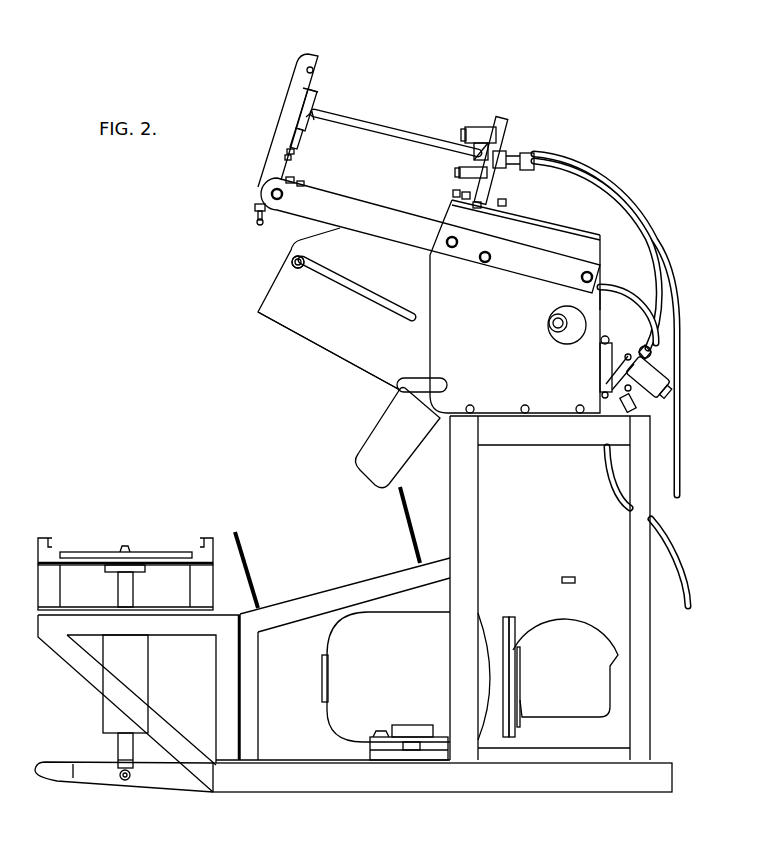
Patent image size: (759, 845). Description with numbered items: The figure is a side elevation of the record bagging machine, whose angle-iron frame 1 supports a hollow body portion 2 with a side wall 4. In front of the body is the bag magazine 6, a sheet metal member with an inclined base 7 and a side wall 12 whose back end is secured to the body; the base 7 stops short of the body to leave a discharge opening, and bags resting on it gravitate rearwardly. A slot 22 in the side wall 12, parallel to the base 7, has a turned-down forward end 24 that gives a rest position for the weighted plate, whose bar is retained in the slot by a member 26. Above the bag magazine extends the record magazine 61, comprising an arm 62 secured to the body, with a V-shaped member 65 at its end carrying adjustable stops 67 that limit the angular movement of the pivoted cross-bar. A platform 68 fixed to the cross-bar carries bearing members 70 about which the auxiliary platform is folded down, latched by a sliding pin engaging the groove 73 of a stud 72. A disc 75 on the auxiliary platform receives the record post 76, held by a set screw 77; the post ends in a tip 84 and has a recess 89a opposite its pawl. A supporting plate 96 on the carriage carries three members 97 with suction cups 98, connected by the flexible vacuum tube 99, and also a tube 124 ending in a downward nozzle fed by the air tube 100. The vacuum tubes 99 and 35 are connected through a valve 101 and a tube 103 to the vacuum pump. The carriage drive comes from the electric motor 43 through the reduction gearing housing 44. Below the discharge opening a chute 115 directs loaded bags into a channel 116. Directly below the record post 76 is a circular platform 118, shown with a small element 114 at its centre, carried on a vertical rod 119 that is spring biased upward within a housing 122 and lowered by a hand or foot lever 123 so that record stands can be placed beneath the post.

The frame 1 is at (669, 530).
The hollow body portion 2 is at (612, 336).
The side wall 4 is at (594, 301).
The bag magazine 6 is at (224, 319).
The inclined base 7 is at (314, 353).
The side wall 12 is at (290, 321).
The slot 22 is at (397, 318).
The forward end of slot 24 is at (289, 265).
The retaining member 26 is at (292, 259).
The vacuum tube 35 is at (638, 299).
The electric motor 43 is at (412, 688).
The reduction gearing housing 44 is at (590, 672).
The record magazine 61 is at (256, 134).
The arm 62 is at (352, 207).
The V-shaped member 65 is at (257, 209).
The adjustable stop 67 is at (257, 220).
The platform 68 is at (278, 154).
The bearing member 70 is at (312, 65).
The stud 72 is at (299, 140).
The circumferential groove 73 is at (290, 151).
The disc 75 is at (310, 124).
The record post 76 is at (381, 128).
The set screw 77 is at (318, 104).
The tip 84 is at (507, 160).
The recess 89a is at (487, 150).
The supporting plate 96 is at (504, 118).
The forwardly directed member 97 is at (480, 122).
The suction cup 98 is at (463, 130).
The flexible vacuum tube 99 is at (664, 271).
The flexible air tube 100 is at (635, 255).
The valve 101 is at (652, 380).
The vacuum tube 103 is at (674, 567).
The stud 114 is at (121, 547).
The chute 115 is at (378, 467).
The channel 116 is at (400, 500).
The circular platform 118 is at (157, 552).
The vertical rod 119 is at (122, 596).
The housing 122 is at (138, 684).
The lever 123 is at (66, 778).
The tube 124 is at (463, 194).